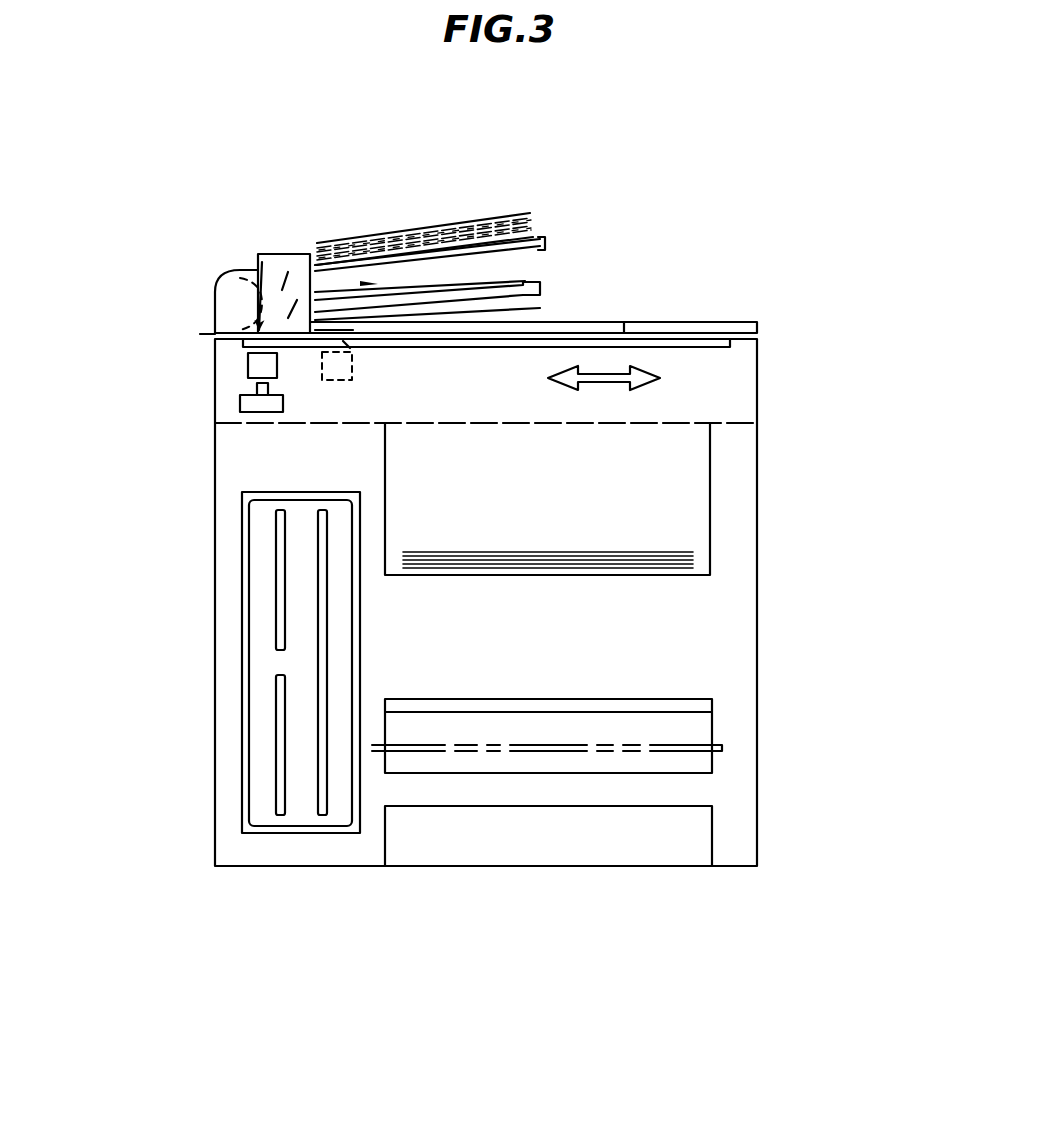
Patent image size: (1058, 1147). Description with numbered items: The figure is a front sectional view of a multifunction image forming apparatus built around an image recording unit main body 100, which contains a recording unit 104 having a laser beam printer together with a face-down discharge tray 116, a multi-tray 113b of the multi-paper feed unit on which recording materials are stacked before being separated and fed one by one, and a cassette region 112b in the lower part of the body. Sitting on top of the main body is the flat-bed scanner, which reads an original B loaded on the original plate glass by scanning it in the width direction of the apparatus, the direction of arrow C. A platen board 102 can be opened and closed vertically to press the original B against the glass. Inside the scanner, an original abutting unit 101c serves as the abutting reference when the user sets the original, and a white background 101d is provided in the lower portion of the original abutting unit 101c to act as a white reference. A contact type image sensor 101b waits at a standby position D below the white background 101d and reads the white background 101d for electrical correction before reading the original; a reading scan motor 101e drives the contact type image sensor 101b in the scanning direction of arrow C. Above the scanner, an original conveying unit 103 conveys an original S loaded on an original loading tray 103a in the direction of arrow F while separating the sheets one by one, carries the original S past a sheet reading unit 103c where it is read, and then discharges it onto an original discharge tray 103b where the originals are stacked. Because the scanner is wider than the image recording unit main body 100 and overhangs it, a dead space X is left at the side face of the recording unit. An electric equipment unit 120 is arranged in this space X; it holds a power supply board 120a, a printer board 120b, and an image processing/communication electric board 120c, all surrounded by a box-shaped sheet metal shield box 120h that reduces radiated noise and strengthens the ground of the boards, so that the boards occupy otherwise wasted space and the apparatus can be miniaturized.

The image recording unit main body 100 is at (798, 551).
The platen board 102 is at (727, 321).
The original abutting unit 101c is at (345, 339).
The white background 101d is at (343, 341).
The original conveying unit 103 is at (380, 241).
The original loading tray 103a is at (540, 238).
The original discharge tray 103b is at (530, 282).
The sheet reading unit 103c is at (215, 272).
The contact type image sensor 101b is at (248, 365).
The reading scan motor 101e is at (243, 402).
The recording unit 104 is at (640, 643).
The multi-tray 113b is at (660, 706).
The face-down discharge tray 116 is at (688, 747).
The sheet cassette 112b is at (547, 843).
The electric equipment unit 120 is at (230, 723).
The power supply board 120a is at (328, 805).
The printer board 120b is at (282, 708).
The image processing/communication electric board 120c is at (278, 596).
The shield box 120h is at (247, 787).
The original S is at (483, 218).
The arrow F is at (296, 270).
The original B is at (625, 335).
The arrow C is at (604, 392).
The standby position D is at (337, 370).
The space X is at (300, 486).